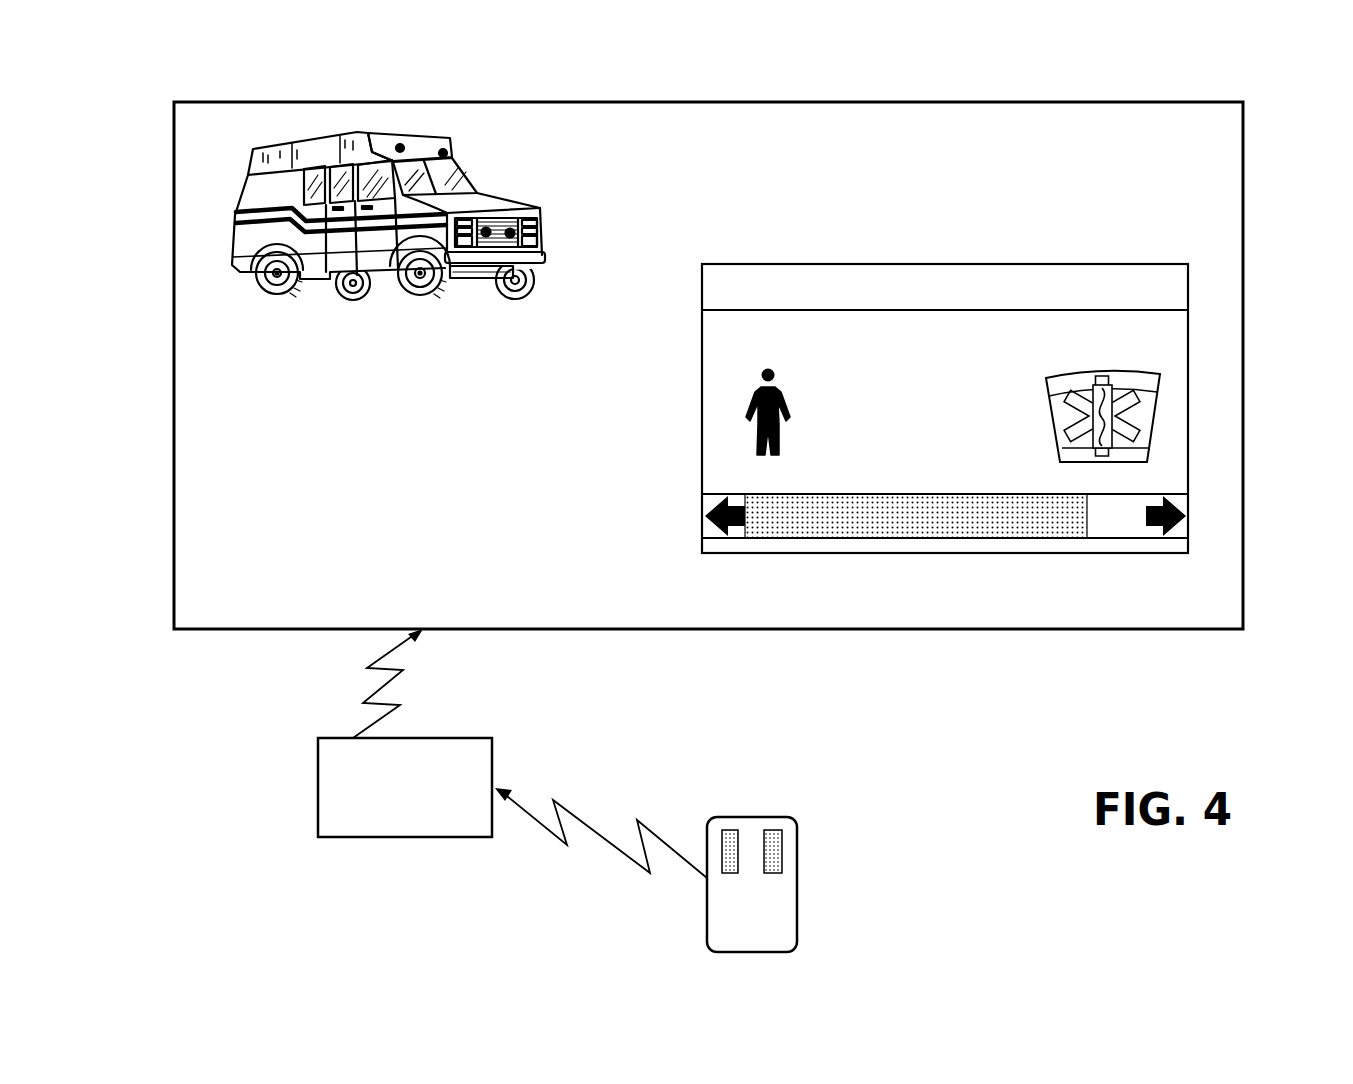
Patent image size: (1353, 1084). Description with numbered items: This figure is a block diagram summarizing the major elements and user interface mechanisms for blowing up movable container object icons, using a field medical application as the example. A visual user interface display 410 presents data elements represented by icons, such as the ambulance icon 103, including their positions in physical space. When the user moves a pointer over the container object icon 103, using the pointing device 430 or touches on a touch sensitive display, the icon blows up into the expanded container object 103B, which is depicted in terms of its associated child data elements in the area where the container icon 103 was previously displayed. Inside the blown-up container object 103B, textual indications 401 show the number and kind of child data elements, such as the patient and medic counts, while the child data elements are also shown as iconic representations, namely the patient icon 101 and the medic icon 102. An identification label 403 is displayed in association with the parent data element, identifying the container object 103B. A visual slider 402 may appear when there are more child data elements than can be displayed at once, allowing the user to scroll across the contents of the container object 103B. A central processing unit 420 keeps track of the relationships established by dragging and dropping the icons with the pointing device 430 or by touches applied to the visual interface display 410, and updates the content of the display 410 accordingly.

The patient icon 101 is at (778, 436).
The medic icon 102 is at (1070, 423).
The ambulance icon 103 is at (538, 208).
The blown-up container object 103B is at (702, 398).
The textual indications of child data elements 401 is at (1048, 345).
The visual slider 402 is at (983, 553).
The identification label 403 is at (1017, 275).
The visual user interface display 410 is at (1245, 282).
The central processing unit 420 is at (318, 777).
The pointing device 430 is at (797, 905).